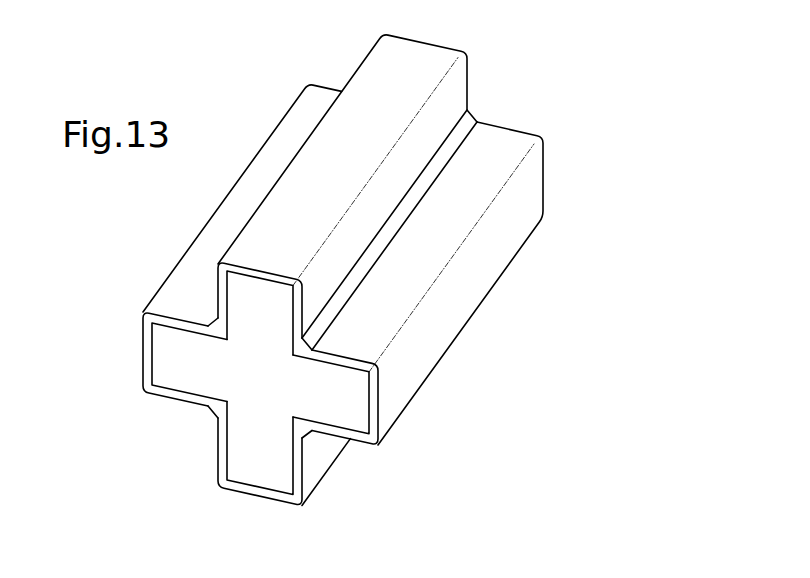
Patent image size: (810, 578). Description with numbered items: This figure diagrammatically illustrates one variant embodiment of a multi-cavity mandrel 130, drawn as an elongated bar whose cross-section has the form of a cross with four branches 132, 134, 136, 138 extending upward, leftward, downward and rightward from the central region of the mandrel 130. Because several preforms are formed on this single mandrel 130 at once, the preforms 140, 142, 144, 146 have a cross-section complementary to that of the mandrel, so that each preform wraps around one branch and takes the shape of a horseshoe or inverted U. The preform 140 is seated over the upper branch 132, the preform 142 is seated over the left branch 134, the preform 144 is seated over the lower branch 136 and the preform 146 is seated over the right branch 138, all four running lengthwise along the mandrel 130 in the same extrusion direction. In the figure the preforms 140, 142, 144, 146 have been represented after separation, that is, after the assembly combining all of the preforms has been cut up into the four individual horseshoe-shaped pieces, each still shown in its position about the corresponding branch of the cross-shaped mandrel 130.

The multi-cavity mandrel 130 is at (283, 391).
The branch 132 is at (284, 318).
The branch 134 is at (212, 376).
The branch 136 is at (284, 463).
The branch 138 is at (352, 406).
The preform 140 is at (507, 74).
The preform 142 is at (153, 252).
The preform 144 is at (368, 486).
The preform 146 is at (572, 177).